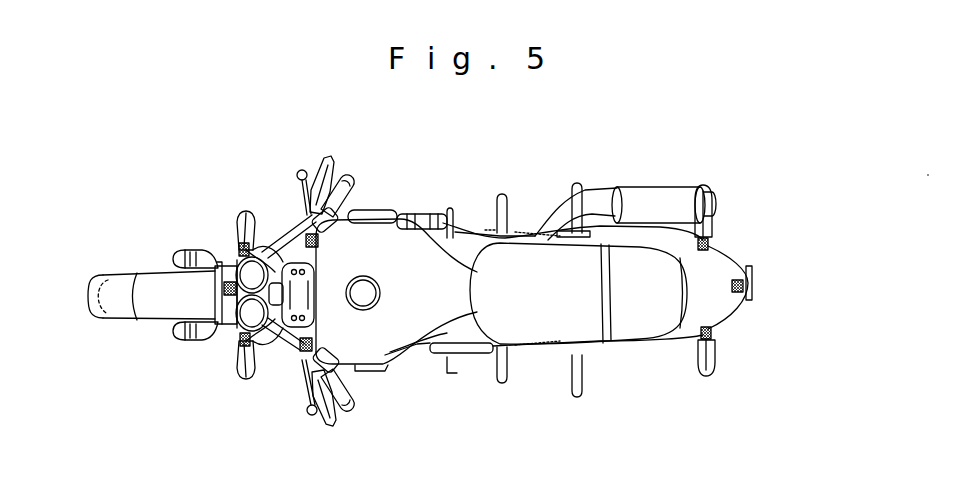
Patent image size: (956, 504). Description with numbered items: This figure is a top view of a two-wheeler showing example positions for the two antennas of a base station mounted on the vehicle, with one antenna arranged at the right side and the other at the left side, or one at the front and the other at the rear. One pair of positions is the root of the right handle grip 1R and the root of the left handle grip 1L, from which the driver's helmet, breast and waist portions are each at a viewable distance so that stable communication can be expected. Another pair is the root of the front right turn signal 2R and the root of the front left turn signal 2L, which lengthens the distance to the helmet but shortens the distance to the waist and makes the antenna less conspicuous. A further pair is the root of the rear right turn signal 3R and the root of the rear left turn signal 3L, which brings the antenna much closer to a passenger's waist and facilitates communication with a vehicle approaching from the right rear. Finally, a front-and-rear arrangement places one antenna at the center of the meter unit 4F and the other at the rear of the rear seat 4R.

The root of right handle grip 1R is at (306, 214).
The root of left handle grip 1L is at (300, 375).
The root of front right turn signal 2R is at (225, 236).
The root of front left turn signal 2L is at (226, 349).
The root of rear right turn signal 3R is at (717, 234).
The root of rear left turn signal 3L is at (719, 340).
The center of meter unit 4F is at (210, 287).
The rear of rear seat 4R is at (760, 281).